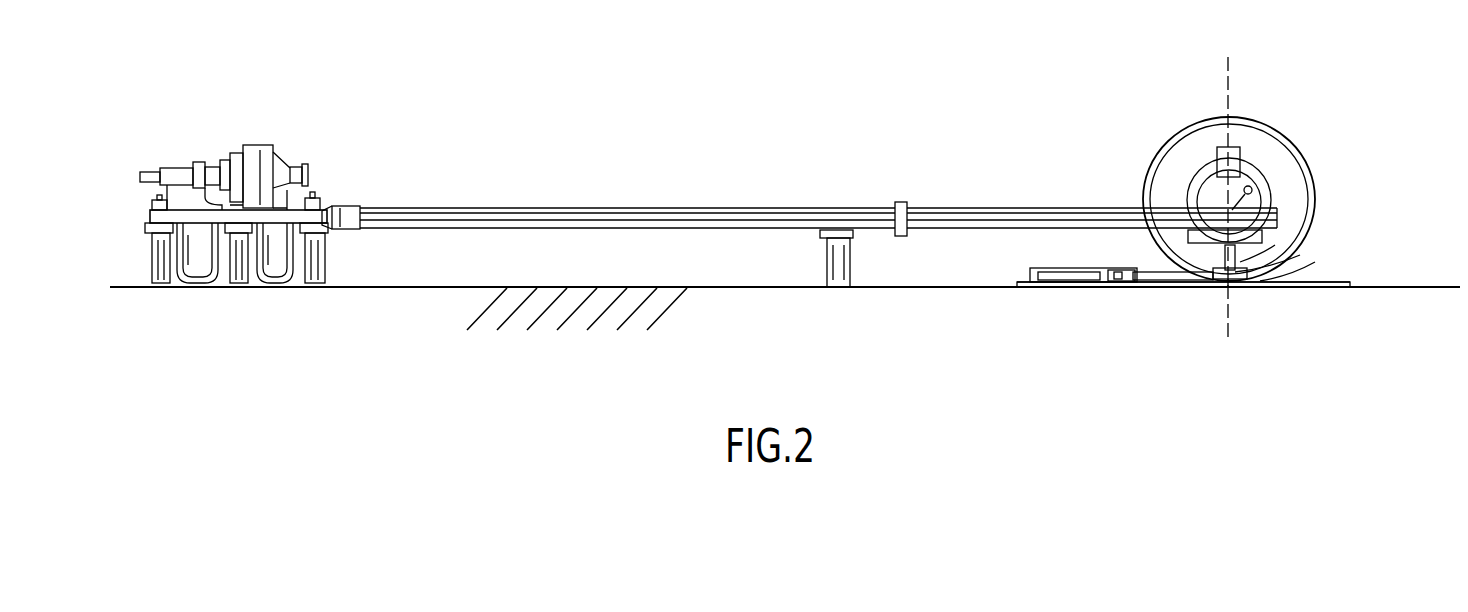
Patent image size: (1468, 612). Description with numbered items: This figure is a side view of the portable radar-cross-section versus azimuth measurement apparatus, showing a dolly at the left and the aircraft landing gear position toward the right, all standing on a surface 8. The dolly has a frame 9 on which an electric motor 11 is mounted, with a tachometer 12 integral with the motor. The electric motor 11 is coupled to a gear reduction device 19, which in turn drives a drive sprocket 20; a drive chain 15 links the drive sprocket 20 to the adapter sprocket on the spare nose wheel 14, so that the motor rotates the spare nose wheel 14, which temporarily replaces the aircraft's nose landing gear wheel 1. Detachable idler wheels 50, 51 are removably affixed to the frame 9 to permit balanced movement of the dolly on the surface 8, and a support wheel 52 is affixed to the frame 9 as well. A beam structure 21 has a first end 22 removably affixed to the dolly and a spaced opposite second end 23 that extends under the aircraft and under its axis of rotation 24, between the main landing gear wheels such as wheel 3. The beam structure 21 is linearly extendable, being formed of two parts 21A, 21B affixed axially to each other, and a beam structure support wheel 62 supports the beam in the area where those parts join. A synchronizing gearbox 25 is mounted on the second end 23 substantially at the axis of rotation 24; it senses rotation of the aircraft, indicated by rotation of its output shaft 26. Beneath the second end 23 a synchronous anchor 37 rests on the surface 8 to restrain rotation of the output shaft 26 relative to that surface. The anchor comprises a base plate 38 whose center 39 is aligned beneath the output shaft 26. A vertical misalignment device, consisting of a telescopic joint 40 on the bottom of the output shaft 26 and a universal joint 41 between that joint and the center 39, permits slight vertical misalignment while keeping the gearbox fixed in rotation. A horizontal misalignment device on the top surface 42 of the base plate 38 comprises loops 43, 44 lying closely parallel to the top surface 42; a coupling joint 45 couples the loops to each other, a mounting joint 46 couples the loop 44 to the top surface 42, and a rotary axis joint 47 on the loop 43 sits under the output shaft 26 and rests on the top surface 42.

The nose landing gear wheel 1 is at (196, 285).
The main landing gear wheel 3 is at (1272, 160).
The surface 8 is at (562, 287).
The frame 9 is at (160, 220).
The electric motor 11 is at (173, 170).
The tachometer 12 is at (140, 177).
The spare nose wheel 14 is at (273, 270).
The drive chain 15 is at (303, 190).
The gear reduction device 19 is at (270, 148).
The drive sprocket 20 is at (297, 165).
The beam structure 21 is at (818, 190).
The first part of beam structure 21A is at (645, 225).
The second part of beam structure 21B is at (952, 228).
The first end 22 is at (357, 206).
The second end 23 is at (1280, 222).
The axis of rotation 24 is at (1228, 66).
The synchronizing gearbox 25 is at (1157, 237).
The output shaft 26 is at (1220, 272).
The synchronous anchor 37 is at (1345, 288).
The base plate 38 is at (1280, 278).
The center 39 is at (1233, 282).
The telescopic joint 40 is at (1238, 260).
The universal joint 41 is at (1240, 267).
The top surface 42 is at (1330, 280).
The loop 43 is at (1152, 282).
The loop 44 is at (1078, 270).
The coupling joint 45 is at (1110, 268).
The mounting joint 46 is at (1052, 282).
The rotary axis joint 47 is at (1228, 288).
The detachable idler wheel 50 is at (313, 288).
The detachable idler wheel 51 is at (160, 285).
The support wheel 52 is at (240, 285).
The beam structure support wheel 62 is at (837, 288).